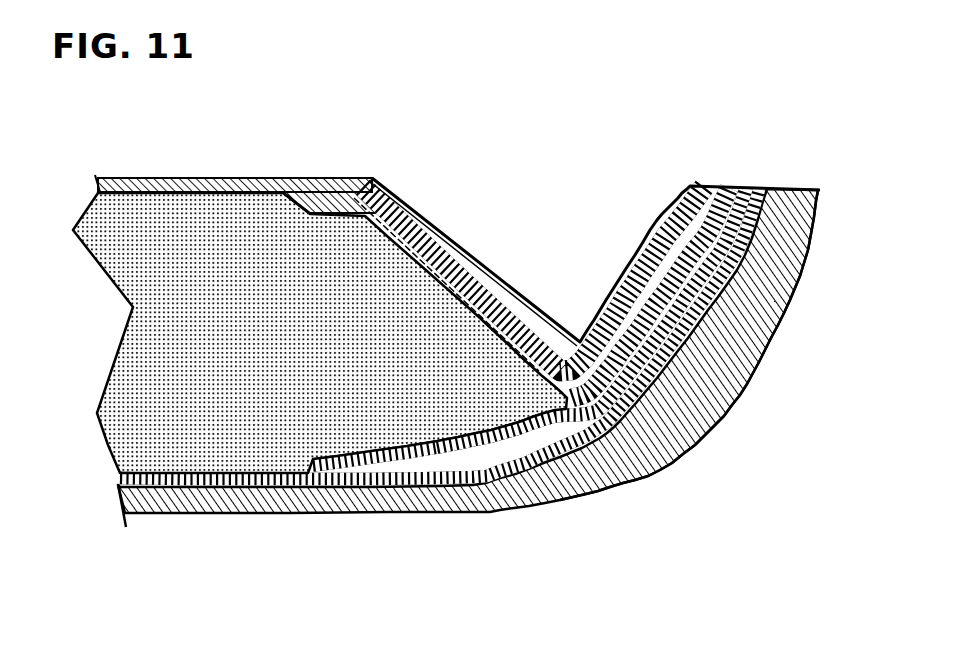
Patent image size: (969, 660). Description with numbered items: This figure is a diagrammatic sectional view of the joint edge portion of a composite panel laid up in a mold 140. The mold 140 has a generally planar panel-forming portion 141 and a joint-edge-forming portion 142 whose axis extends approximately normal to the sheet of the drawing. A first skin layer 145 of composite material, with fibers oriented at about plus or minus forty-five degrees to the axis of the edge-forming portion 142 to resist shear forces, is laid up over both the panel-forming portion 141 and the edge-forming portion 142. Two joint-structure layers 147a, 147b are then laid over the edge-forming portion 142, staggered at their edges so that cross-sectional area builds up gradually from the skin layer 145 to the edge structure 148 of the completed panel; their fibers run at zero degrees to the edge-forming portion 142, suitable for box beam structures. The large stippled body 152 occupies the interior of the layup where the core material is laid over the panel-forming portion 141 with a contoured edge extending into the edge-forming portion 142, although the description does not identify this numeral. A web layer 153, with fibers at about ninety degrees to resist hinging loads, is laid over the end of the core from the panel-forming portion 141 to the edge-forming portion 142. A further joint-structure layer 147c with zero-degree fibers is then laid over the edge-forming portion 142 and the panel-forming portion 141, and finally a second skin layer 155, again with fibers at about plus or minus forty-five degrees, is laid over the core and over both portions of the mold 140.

The mold 140 is at (233, 542).
The panel-forming portion 141 is at (200, 500).
The joint-edge-forming portion 142 is at (742, 372).
The first skin layer 145 is at (173, 470).
The joint-structure layer 147a is at (320, 463).
The joint-structure layer 147b is at (437, 440).
The joint-structure layer 147c is at (482, 257).
The edge structure 148 is at (579, 260).
The filler body 152 is at (249, 405).
The web layer 153 is at (430, 284).
The second skin layer 155 is at (233, 167).